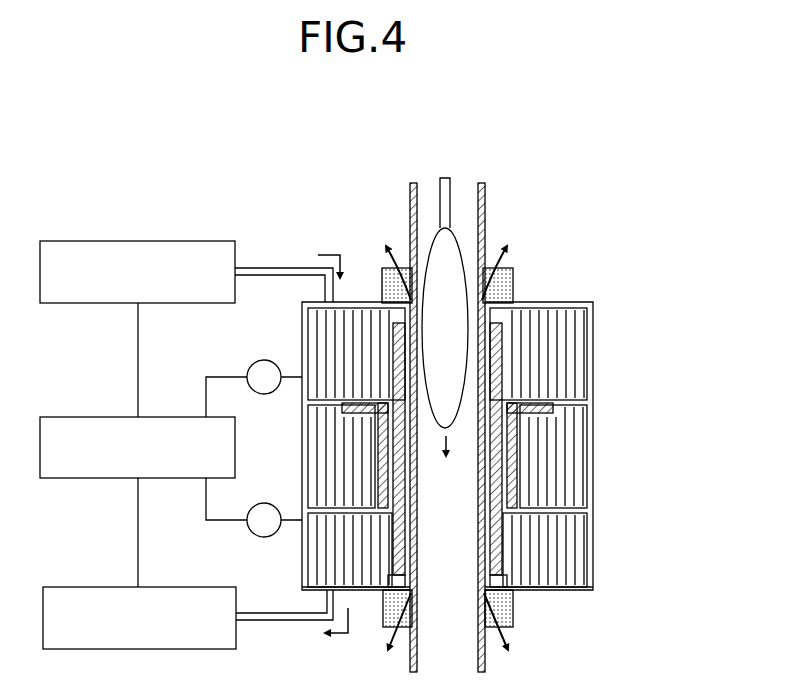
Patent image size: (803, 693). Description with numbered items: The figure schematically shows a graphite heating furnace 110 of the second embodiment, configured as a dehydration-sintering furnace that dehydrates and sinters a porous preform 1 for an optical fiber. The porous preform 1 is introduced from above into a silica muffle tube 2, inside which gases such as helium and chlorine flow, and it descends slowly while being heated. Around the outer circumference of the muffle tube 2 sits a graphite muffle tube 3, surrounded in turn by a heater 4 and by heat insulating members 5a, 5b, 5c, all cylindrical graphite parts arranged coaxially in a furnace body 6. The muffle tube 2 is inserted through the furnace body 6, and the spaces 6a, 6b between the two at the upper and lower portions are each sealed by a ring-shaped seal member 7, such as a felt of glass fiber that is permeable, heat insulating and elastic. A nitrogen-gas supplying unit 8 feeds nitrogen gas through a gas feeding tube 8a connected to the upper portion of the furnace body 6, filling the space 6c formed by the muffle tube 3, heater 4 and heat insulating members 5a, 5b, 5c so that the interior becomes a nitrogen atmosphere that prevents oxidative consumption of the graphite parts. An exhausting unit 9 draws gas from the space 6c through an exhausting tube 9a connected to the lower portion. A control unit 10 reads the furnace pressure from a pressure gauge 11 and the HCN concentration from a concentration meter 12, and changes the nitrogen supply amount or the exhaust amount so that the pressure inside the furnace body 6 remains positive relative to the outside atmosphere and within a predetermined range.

The graphite heating furnace 110 is at (467, 157).
The porous preform 1 is at (437, 235).
The muffle tube 2 is at (486, 208).
The muffle tube 3 is at (498, 340).
The heater 4 is at (553, 410).
The heat insulating member 5a is at (587, 329).
The heat insulating member 5b is at (587, 454).
The heat insulating member 5c is at (587, 537).
The furnace body 6 is at (593, 489).
The space 6a is at (411, 302).
The space 6b is at (411, 593).
The space 6c is at (593, 579).
The seal member 7 is at (513, 278).
The nitrogen-gas supplying unit 8 is at (210, 241).
The gas feeding tube 8a is at (252, 268).
The exhausting unit 9 is at (205, 587).
The exhausting tube 9a is at (270, 621).
The control unit 10 is at (72, 417).
The pressure gauge 11 is at (265, 360).
The concentration meter 12 is at (268, 503).